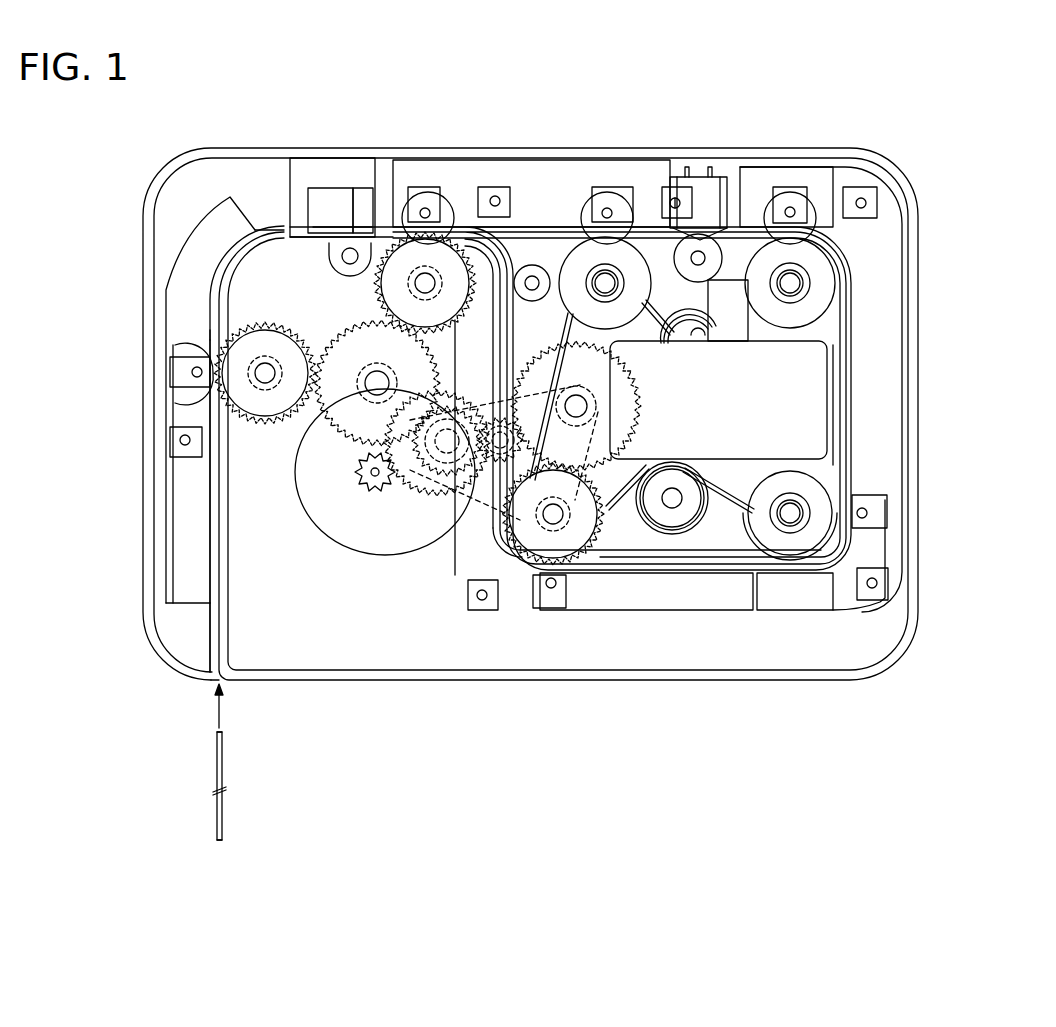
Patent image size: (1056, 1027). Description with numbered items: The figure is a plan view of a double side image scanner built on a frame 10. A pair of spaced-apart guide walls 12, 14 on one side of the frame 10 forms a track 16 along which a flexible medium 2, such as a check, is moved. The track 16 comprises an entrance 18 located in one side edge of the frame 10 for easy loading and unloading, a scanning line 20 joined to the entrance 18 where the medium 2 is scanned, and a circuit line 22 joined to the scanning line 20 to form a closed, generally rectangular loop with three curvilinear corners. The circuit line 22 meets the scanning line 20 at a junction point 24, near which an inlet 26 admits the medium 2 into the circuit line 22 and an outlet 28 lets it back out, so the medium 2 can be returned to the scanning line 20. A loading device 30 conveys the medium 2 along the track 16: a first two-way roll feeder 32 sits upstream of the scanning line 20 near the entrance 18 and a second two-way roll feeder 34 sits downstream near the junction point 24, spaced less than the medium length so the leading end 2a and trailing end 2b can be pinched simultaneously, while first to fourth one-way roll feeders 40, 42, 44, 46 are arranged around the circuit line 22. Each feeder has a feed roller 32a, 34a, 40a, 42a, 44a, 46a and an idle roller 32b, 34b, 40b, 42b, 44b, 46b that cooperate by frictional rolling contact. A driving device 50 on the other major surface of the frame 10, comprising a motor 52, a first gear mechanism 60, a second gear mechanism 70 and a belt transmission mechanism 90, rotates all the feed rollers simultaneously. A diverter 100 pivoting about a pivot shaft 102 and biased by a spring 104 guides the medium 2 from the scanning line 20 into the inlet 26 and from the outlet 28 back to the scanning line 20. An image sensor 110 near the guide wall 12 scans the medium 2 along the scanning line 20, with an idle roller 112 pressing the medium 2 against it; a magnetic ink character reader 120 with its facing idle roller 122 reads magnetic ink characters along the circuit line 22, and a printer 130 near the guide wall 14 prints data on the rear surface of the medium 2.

The flexible medium 2 is at (215, 761).
The leading end 2a is at (213, 726).
The trailing end 2b is at (217, 842).
The frame 10 is at (887, 653).
The guide wall 12 is at (222, 625).
The guide wall 14 is at (223, 627).
The track 16 is at (219, 514).
The entrance 18 is at (213, 677).
The scanning line 20 is at (219, 486).
The circuit line 22 is at (837, 387).
The junction point 24 is at (403, 257).
The inlet 26 is at (440, 245).
The outlet 28 is at (467, 255).
The loading device 30 is at (206, 327).
The first two-way roll feeder 32 is at (165, 389).
The feed roller 32a is at (237, 353).
The idle roller 32b is at (200, 395).
The second two-way roll feeder 34 is at (321, 135).
The feed roller 34a is at (317, 200).
The idle roller 34b is at (357, 193).
The first one-way roll feeder 40 is at (629, 183).
The feed roller 40a is at (640, 248).
The idle roller 40b is at (622, 258).
The second one-way roll feeder 42 is at (897, 273).
The feed roller 42a is at (823, 283).
The idle roller 42b is at (807, 218).
The third one-way roll feeder 44 is at (896, 510).
The feed roller 44a is at (810, 488).
The idle roller 44b is at (870, 495).
The fourth one-way roll feeder 46 is at (608, 625).
The feed roller 46a is at (650, 517).
The idle roller 46b is at (583, 523).
The driving device 50 is at (373, 566).
The motor 52 is at (452, 512).
The first gear mechanism 60 is at (338, 322).
The second gear mechanism 70 is at (466, 515).
The belt transmission mechanism 90 is at (723, 515).
The diverter 100 is at (517, 272).
The pivot shaft 102 is at (559, 248).
The spring 104 is at (527, 250).
The image sensor 110 is at (320, 205).
The idle roller 112 is at (297, 263).
The magnetic ink character reader 120 is at (703, 190).
The idle roller 122 is at (715, 262).
The printer 130 is at (802, 420).